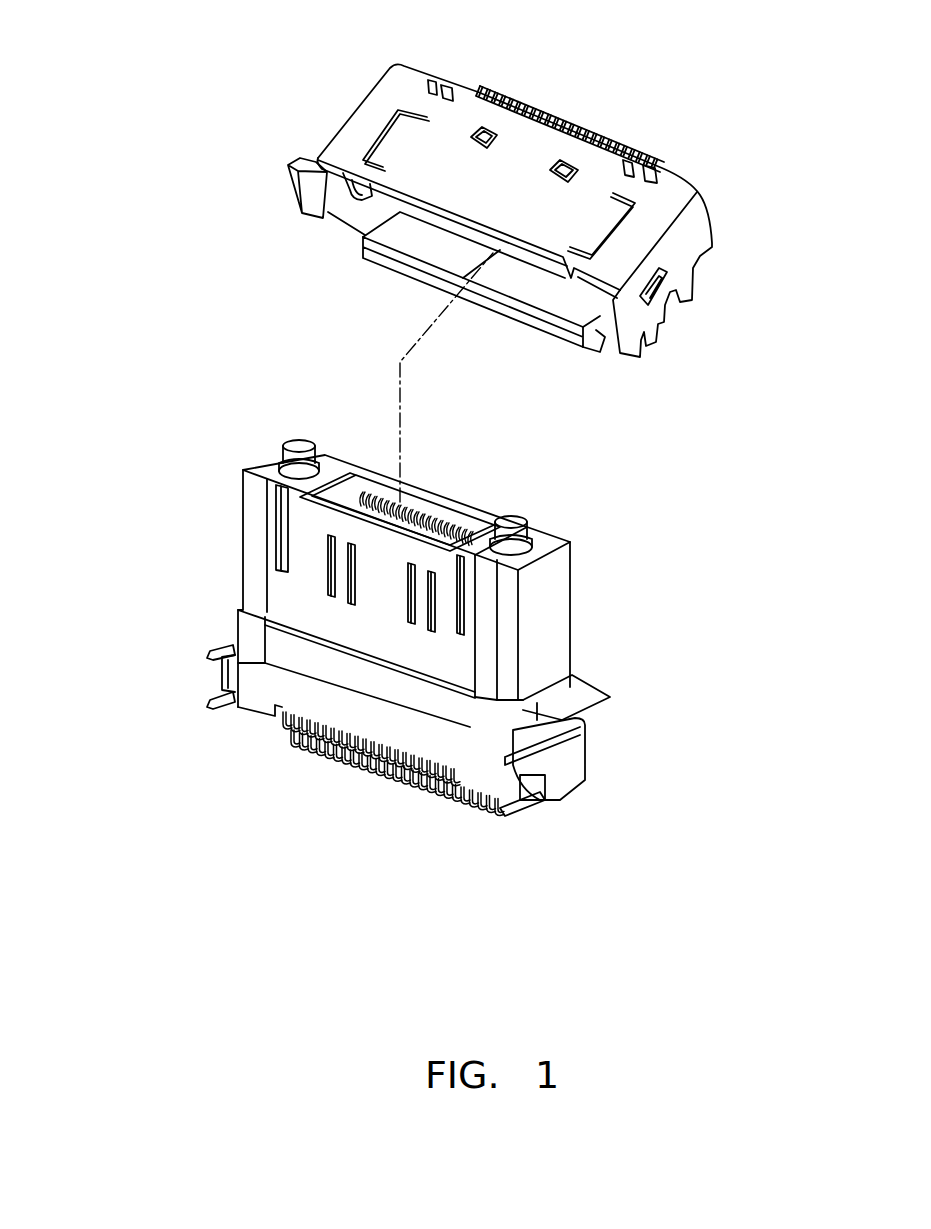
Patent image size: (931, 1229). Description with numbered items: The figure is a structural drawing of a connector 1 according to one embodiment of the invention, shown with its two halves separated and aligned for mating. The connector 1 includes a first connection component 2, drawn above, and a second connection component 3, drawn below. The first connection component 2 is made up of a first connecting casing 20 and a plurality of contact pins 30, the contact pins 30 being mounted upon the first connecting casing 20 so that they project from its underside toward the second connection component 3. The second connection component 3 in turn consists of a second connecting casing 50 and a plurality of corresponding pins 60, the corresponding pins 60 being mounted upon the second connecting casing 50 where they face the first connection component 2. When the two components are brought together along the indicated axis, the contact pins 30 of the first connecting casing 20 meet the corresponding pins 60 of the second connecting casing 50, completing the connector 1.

The connector 1 is at (118, 53).
The first connection component 2 is at (239, 124).
The second connection component 3 is at (226, 416).
The first connecting casing 20 is at (693, 242).
The contact pins 30 is at (372, 236).
The second connecting casing 50 is at (548, 580).
The corresponding pins 60 is at (457, 502).